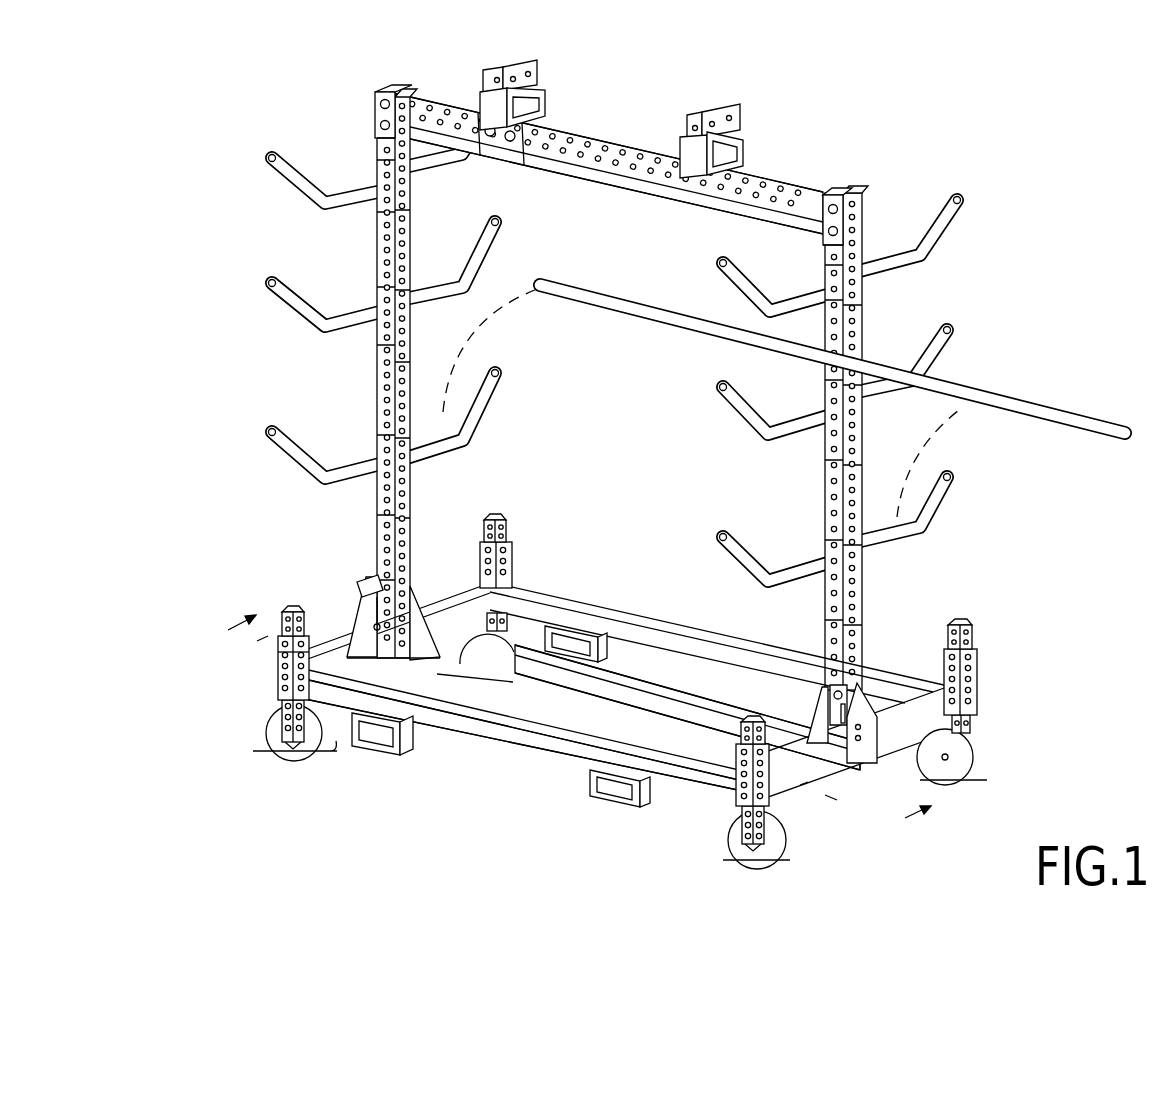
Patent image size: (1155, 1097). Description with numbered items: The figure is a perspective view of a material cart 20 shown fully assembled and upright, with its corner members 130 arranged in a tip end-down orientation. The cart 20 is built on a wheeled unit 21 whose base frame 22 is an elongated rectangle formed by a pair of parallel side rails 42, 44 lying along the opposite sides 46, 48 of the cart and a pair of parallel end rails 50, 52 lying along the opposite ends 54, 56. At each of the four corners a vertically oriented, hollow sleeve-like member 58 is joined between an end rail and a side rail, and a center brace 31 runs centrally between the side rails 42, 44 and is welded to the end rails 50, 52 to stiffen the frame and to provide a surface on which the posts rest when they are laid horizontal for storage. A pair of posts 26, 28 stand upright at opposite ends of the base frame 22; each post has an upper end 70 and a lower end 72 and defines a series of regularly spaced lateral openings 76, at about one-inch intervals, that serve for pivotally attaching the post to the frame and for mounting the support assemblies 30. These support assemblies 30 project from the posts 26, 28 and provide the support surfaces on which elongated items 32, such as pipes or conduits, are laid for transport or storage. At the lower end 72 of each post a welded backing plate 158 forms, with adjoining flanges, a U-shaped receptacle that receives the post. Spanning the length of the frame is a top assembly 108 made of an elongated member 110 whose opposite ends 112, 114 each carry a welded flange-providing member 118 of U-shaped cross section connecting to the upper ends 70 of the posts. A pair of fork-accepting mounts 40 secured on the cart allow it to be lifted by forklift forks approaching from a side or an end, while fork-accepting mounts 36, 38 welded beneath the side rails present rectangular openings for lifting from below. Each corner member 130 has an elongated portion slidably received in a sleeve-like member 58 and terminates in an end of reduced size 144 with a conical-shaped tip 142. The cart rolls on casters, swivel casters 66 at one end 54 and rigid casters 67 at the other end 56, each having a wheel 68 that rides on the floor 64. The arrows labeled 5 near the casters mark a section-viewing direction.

The material cart 20 is at (639, 462).
The wheeled unit 21 is at (817, 792).
The base frame 22 is at (628, 660).
The post 26 is at (378, 540).
The post 28 is at (866, 578).
The support assemblies 30 is at (268, 174).
The center brace 31 is at (655, 682).
The elongated items 32 is at (1082, 403).
The fork-accepting mount 36 is at (405, 755).
The fork-accepting mount 38 is at (596, 806).
The fork-accepting mounts 40 is at (538, 64).
The side rail 42 is at (572, 762).
The side rail 44 is at (722, 640).
The side 46 is at (526, 733).
The side 48 is at (589, 600).
The end rail 50 is at (345, 612).
The end rail 52 is at (835, 775).
The end 54 is at (288, 650).
The end 56 is at (978, 718).
The sleeve-like member 58 is at (278, 672).
The floor 64 is at (972, 760).
The caster 66 is at (336, 744).
The caster 67 is at (735, 857).
The wheel 68 is at (266, 737).
The upper end 70 is at (377, 137).
The lower end 72 is at (418, 580).
The openings 76 is at (388, 399).
The top assembly 108 is at (620, 133).
The elongated member 110 is at (592, 180).
The end 112 is at (410, 90).
The end 114 is at (808, 187).
The flange-providing member 118 is at (375, 92).
The corner member 130 is at (290, 612).
The conical-shaped tip 142 is at (292, 742).
The end of reduced size 144 is at (285, 730).
The backing plate 158 is at (847, 760).
The section line 5- 5 is at (596, 703).